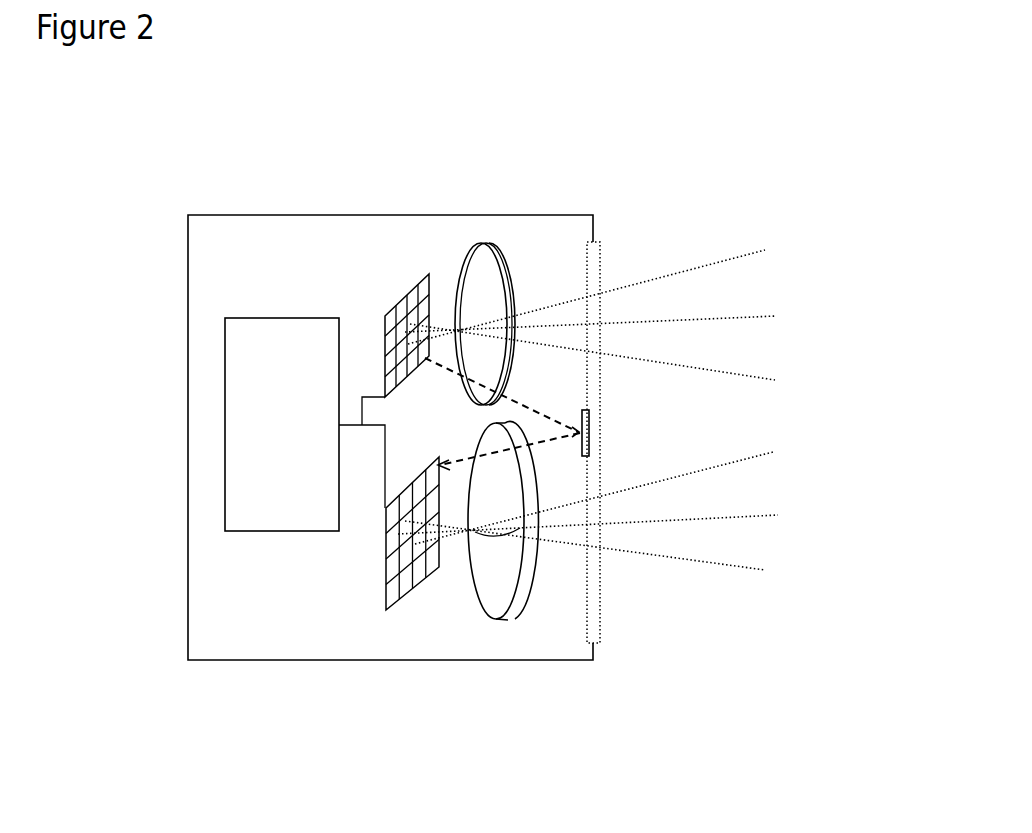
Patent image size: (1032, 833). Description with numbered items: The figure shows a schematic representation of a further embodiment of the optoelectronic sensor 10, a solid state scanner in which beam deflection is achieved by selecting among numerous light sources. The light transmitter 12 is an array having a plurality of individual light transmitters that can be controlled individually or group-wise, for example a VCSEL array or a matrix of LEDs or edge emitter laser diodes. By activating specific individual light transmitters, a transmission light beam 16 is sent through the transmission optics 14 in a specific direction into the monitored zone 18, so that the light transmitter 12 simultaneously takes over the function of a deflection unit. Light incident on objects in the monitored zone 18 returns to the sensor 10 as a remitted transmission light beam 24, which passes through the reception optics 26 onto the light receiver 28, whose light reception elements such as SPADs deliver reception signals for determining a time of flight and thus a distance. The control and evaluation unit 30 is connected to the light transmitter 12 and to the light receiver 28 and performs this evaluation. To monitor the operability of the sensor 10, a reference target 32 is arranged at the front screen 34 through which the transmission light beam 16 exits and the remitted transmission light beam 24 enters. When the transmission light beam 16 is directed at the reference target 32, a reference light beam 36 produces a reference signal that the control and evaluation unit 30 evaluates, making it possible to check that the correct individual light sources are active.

The optoelectronic sensor 10 is at (280, 215).
The light transmitter 12 is at (413, 318).
The transmission optics 14 is at (503, 275).
The transmission light beam 16 is at (727, 318).
The monitored zone 18 is at (909, 216).
The remitted transmission light beam 24 is at (707, 518).
The reception optics 26 is at (507, 568).
The light receiver 28 is at (392, 568).
The control and evaluation unit 30 is at (258, 412).
The reference target 32 is at (590, 430).
The front screen 34 is at (630, 492).
The reference light beam 36 is at (460, 462).